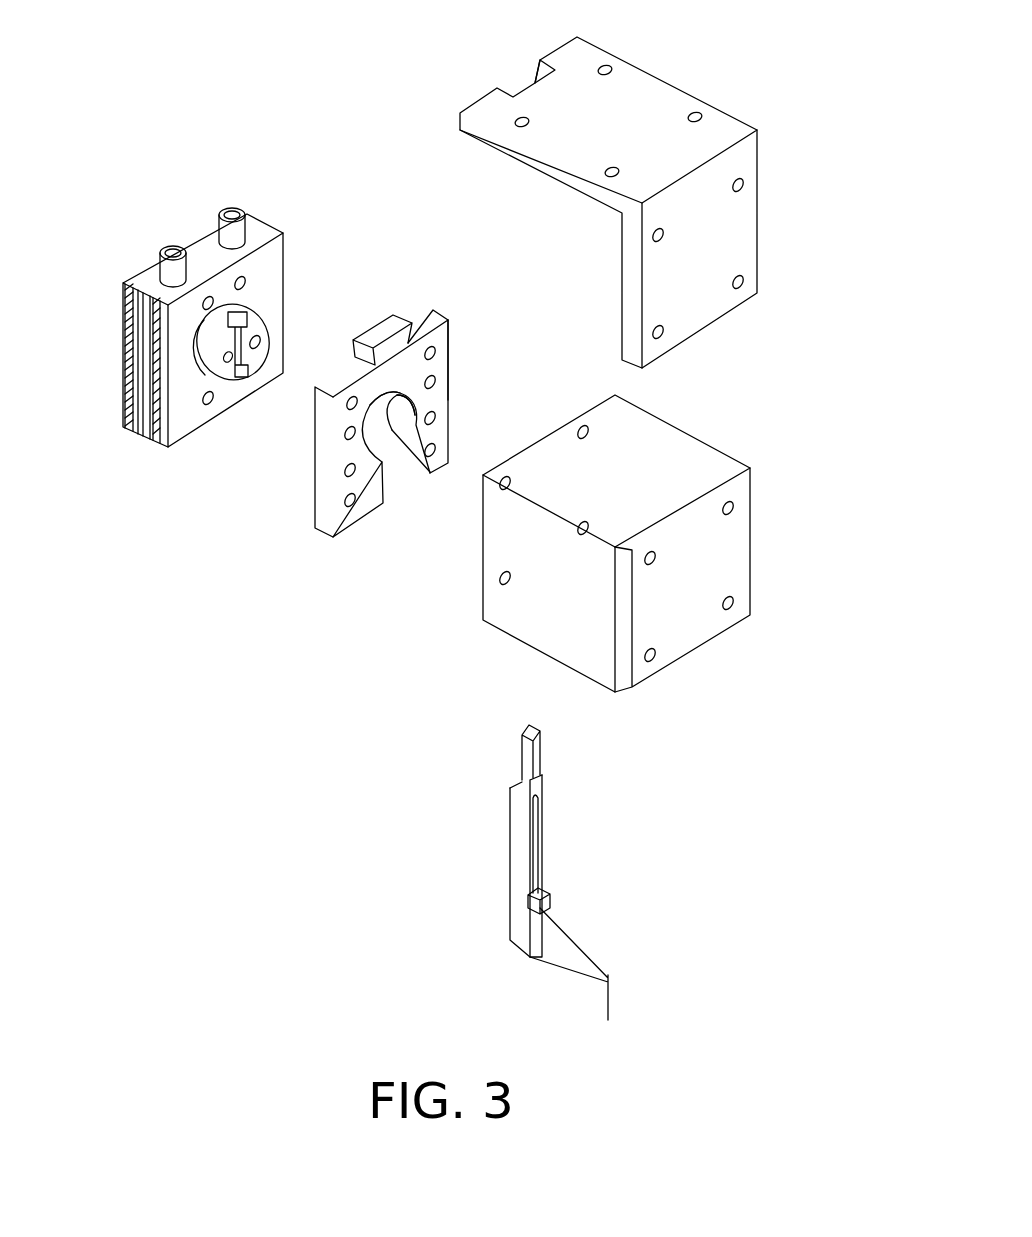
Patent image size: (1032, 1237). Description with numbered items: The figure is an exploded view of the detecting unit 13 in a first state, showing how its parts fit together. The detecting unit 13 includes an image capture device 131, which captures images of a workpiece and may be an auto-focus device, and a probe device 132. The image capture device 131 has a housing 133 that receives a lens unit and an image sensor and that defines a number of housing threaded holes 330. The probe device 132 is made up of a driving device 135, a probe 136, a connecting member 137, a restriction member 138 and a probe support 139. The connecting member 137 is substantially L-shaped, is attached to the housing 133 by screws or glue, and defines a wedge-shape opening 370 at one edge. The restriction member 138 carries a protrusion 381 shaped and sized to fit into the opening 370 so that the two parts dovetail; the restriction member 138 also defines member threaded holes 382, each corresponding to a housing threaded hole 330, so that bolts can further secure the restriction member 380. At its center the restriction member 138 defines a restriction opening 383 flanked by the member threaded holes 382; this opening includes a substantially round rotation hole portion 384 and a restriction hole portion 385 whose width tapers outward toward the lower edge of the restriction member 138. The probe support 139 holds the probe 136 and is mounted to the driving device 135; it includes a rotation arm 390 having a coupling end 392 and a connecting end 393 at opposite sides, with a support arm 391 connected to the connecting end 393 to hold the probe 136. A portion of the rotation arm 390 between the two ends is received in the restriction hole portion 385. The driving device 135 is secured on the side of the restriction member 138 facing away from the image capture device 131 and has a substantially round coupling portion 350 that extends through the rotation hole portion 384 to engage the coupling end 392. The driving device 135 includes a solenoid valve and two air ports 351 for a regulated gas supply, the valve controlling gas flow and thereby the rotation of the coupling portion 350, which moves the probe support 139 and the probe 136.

The detecting unit 13 is at (465, 56).
The image capture device 131 is at (741, 436).
The probe device 132 is at (225, 508).
The housing 133 is at (733, 543).
The driving device 135 is at (143, 332).
The probe 136 is at (612, 987).
The connecting member 137 is at (738, 222).
The restriction member 138 is at (315, 484).
The probe support 139 is at (648, 812).
The housing threaded hole 330 is at (503, 580).
The coupling portion 350 is at (225, 373).
The air ports 351 is at (233, 212).
The wedge-shape opening 370 is at (525, 82).
The restriction member 380 is at (433, 310).
The protrusion 381 is at (372, 340).
The member threaded holes 382 is at (450, 328).
The restriction opening 383 is at (531, 353).
The rotation hole portion 384 is at (425, 385).
The restriction hole portion 385 is at (395, 460).
The rotation arm 390 is at (520, 828).
The support arm 391 is at (555, 930).
The coupling end 392 is at (540, 752).
The connecting end 393 is at (522, 938).